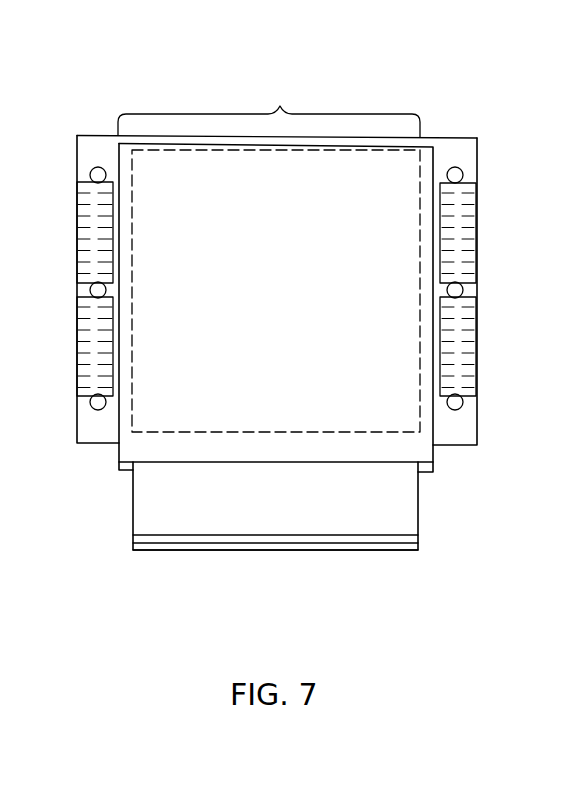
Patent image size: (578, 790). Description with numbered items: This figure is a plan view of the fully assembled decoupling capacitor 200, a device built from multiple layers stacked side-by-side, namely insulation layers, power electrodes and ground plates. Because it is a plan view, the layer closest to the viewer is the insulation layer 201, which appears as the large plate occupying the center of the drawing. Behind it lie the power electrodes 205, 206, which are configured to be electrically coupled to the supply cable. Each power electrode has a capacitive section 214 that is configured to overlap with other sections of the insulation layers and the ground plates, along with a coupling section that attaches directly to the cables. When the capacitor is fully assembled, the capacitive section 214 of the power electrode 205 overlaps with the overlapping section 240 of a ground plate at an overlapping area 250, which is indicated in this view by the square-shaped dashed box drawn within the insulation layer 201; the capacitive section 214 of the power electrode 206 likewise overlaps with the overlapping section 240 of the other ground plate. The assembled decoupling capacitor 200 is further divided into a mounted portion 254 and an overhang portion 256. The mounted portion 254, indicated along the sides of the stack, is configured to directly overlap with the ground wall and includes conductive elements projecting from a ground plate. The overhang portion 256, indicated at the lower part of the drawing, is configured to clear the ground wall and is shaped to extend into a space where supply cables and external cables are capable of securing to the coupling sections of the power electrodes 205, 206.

The decoupling capacitor 200 is at (377, 62).
The insulation layer 201 is at (166, 170).
The power electrode 205 is at (355, 527).
The power electrode 206 is at (207, 552).
The capacitive section 214 is at (383, 198).
The overlapping section 240 is at (280, 106).
The overlapping area 250 is at (391, 432).
The mounted portion 254 is at (490, 256).
The overhang portion 256 is at (108, 510).